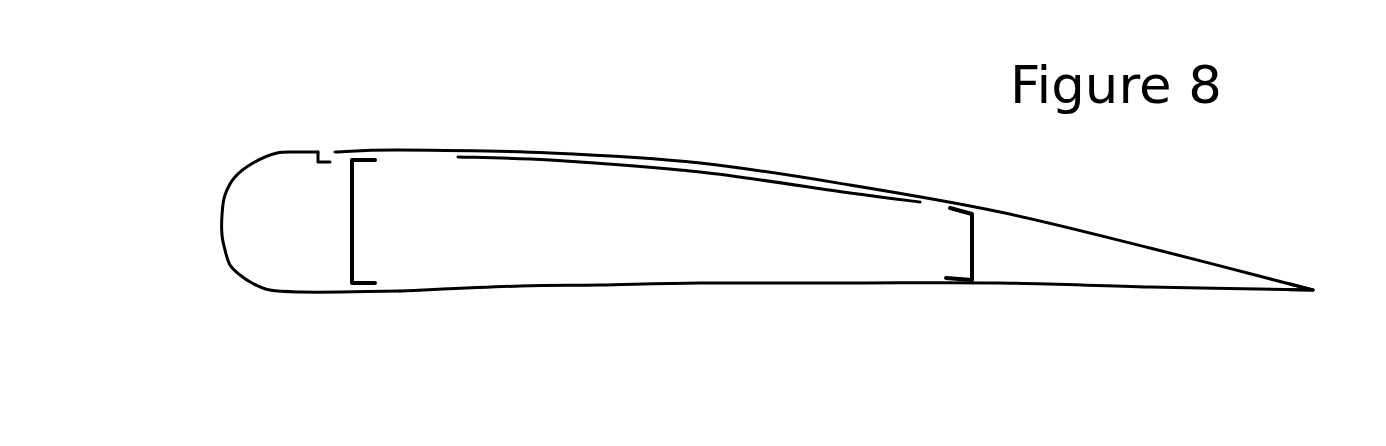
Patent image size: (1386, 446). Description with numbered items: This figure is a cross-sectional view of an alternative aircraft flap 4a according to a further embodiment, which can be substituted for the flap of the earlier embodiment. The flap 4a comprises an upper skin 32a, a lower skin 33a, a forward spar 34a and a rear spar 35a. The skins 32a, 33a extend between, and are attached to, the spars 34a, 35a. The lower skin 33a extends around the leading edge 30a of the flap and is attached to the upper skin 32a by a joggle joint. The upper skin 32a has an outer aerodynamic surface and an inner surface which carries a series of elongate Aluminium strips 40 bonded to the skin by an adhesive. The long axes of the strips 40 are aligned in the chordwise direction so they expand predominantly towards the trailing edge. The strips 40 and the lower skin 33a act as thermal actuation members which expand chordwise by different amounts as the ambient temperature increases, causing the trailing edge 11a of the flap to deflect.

The flap 4a is at (862, 155).
The leading edge 30a is at (222, 227).
The upper skin 32a is at (713, 163).
The lower skin 33a is at (573, 286).
The forward spar 34a is at (353, 212).
The rear spar 35a is at (967, 242).
The elongate Aluminium strips 40 is at (612, 168).
The trailing edge 11a is at (1313, 290).